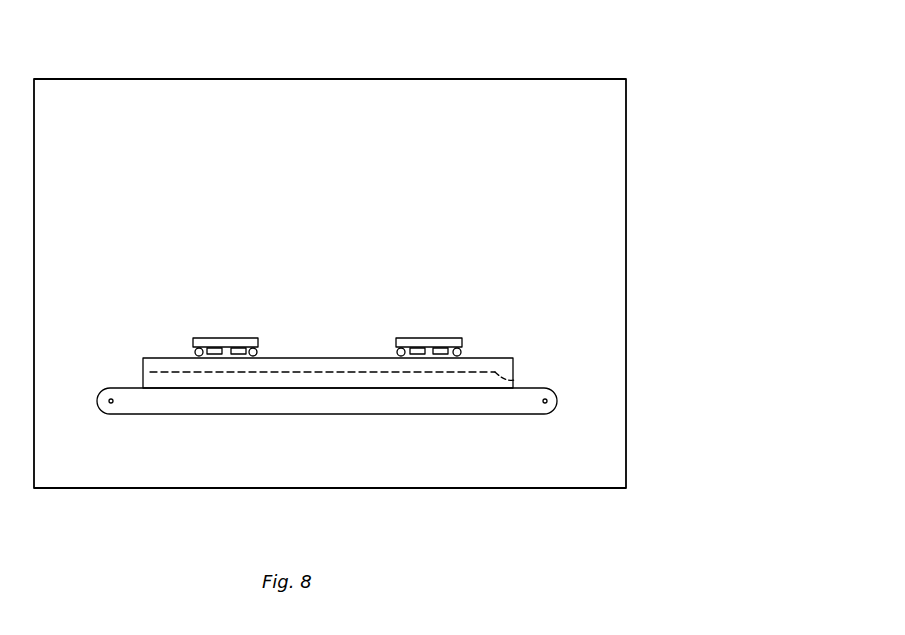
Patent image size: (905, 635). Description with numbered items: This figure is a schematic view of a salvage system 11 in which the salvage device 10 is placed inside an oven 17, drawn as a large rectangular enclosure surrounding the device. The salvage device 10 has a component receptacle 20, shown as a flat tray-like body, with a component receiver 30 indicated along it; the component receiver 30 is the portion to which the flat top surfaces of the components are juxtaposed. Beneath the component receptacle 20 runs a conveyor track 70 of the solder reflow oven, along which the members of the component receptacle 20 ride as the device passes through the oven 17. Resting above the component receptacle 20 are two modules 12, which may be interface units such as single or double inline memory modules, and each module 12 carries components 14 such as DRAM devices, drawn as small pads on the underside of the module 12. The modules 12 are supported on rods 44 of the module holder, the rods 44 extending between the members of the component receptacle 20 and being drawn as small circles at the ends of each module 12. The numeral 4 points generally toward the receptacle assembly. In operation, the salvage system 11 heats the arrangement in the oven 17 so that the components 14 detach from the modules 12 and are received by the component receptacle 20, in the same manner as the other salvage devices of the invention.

The oven 17 is at (560, 79).
The salvage system 11 is at (708, 226).
The salvage device 10 is at (505, 292).
The substrate assembly 4 is at (495, 346).
The component receptacle 20 is at (143, 371).
The component receiver 30 is at (506, 379).
The conveyor track 70 is at (557, 398).
The module 12 is at (236, 338).
The component 14 is at (238, 354).
The rod 44 is at (195, 352).